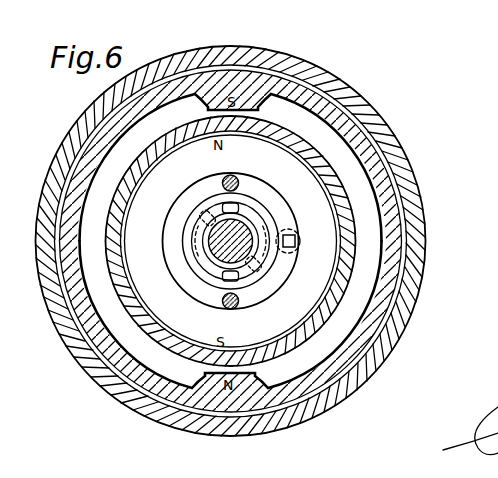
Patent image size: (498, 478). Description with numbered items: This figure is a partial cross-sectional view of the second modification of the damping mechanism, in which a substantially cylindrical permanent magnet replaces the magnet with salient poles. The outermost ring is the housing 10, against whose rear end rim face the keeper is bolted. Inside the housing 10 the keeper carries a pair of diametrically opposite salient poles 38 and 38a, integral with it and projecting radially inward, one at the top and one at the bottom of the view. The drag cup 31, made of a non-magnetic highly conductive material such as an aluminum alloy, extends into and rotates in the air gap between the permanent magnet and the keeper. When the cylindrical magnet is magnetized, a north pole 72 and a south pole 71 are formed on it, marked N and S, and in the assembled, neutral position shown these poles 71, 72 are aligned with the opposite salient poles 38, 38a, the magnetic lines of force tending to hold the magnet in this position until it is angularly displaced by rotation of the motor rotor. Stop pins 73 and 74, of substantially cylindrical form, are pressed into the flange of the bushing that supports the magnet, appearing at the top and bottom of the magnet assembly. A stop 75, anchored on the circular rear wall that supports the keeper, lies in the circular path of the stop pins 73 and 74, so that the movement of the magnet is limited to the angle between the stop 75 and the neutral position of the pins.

The housing 10 is at (418, 292).
The salient pole 38 is at (257, 386).
The salient pole 38a is at (262, 106).
The drag cup 31 is at (353, 283).
The south pole 71 is at (231, 351).
The north pole 72 is at (232, 131).
The stop pin 73 is at (221, 302).
The stop pin 74 is at (239, 181).
The stop 75 is at (295, 243).